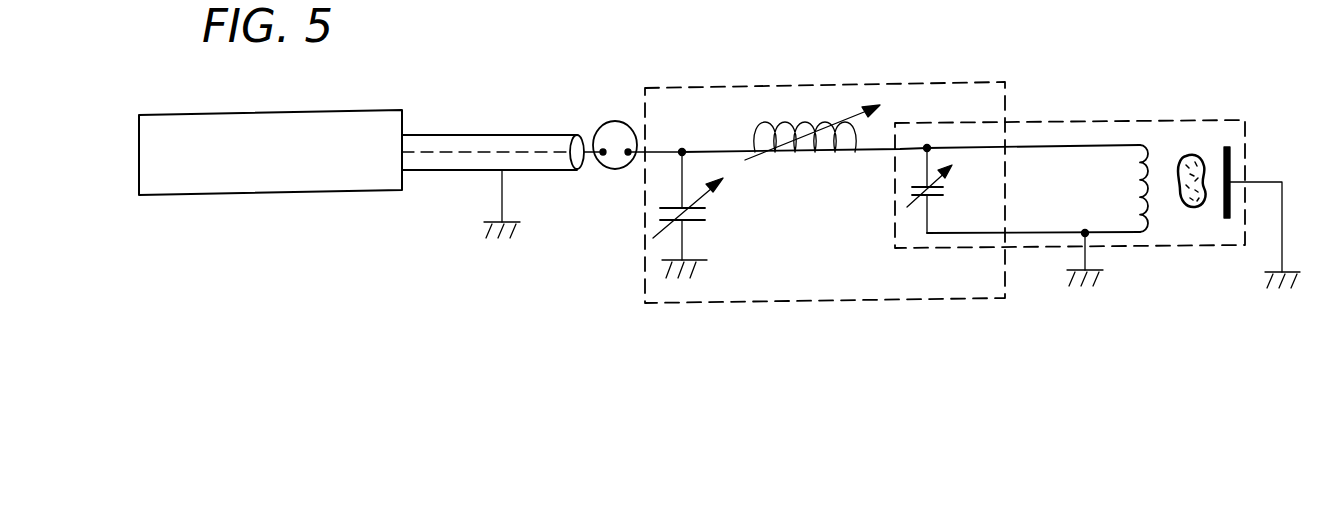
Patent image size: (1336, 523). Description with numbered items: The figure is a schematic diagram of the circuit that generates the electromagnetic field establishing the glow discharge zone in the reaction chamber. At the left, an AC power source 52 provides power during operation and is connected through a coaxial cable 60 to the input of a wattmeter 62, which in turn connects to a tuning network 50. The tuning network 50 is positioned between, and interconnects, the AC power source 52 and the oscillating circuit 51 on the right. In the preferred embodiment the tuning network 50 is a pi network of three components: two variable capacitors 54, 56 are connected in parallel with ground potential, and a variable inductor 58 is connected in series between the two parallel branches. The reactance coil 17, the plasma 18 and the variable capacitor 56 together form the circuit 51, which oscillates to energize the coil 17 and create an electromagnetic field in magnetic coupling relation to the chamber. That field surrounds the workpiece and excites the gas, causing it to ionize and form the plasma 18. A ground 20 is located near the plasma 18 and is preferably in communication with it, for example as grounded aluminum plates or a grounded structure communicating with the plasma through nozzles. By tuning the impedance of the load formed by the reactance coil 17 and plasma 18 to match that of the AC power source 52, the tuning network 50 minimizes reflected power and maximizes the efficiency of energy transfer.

The AC power source 52 is at (263, 112).
The coaxial cable 60 is at (493, 135).
The wattmeter 62 is at (614, 170).
The tuning network 50 is at (750, 85).
The variable capacitor 54 is at (695, 220).
The variable inductor 58 is at (810, 152).
The variable capacitor 56 is at (907, 207).
The circuit 51 is at (1092, 102).
The reactance coil 17 is at (1143, 183).
The plasma 18 is at (1197, 160).
The ground 20 is at (1230, 170).